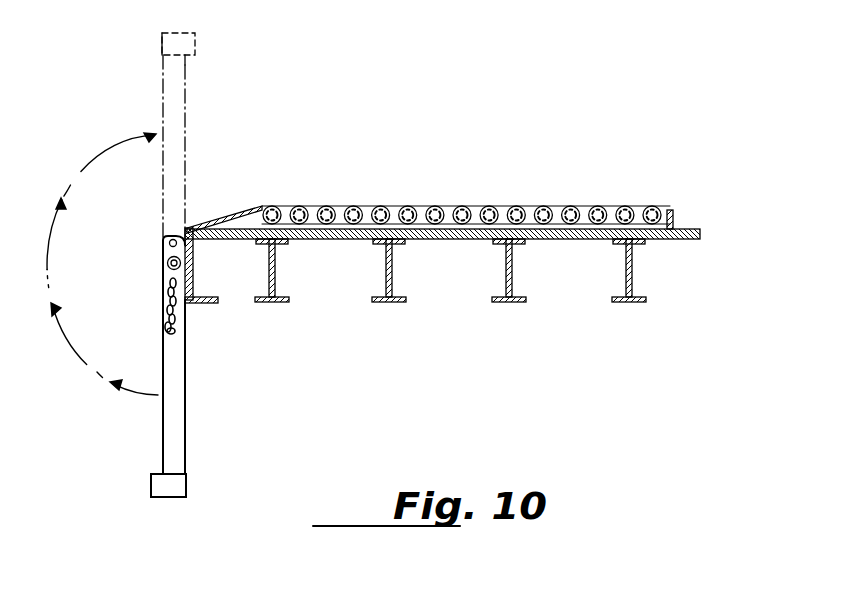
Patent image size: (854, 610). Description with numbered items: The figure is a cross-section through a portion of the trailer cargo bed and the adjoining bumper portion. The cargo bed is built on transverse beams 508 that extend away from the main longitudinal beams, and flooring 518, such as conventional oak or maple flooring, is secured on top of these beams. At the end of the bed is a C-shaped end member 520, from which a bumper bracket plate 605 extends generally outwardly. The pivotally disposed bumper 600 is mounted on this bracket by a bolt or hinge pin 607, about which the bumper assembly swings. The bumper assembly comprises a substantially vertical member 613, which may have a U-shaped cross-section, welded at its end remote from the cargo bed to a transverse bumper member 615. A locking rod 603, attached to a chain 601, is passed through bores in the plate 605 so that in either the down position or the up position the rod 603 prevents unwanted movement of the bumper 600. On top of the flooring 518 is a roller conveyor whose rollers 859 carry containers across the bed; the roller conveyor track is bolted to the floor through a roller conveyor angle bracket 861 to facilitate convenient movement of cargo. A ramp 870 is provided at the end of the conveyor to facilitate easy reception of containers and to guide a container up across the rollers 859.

The bumper 600 is at (192, 124).
The chain 601 is at (188, 326).
The locking rod 603 is at (168, 280).
The plate 605 is at (168, 244).
The hinge pin 607 is at (167, 262).
The vertical member 613 is at (172, 426).
The transverse bumper member 615 is at (162, 487).
The C-shaped end member 520 is at (193, 270).
The flooring 518 is at (464, 241).
The transverse beam 508 is at (373, 301).
The roller 859 is at (351, 207).
The roller conveyor angle bracket 861 is at (673, 216).
The ramp 870 is at (228, 209).